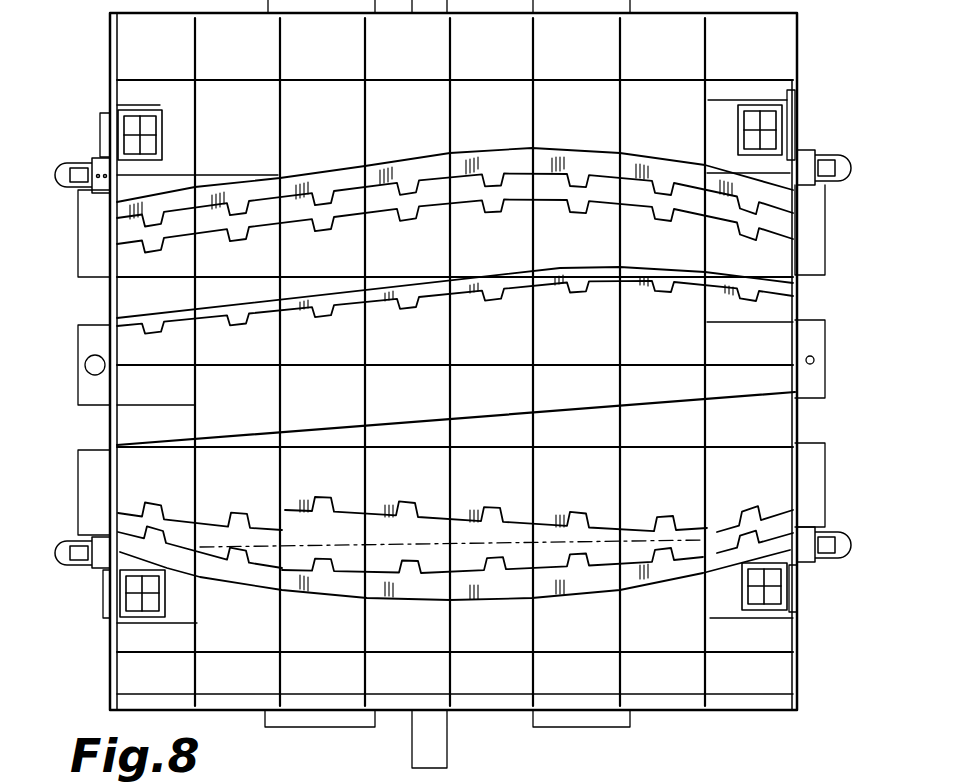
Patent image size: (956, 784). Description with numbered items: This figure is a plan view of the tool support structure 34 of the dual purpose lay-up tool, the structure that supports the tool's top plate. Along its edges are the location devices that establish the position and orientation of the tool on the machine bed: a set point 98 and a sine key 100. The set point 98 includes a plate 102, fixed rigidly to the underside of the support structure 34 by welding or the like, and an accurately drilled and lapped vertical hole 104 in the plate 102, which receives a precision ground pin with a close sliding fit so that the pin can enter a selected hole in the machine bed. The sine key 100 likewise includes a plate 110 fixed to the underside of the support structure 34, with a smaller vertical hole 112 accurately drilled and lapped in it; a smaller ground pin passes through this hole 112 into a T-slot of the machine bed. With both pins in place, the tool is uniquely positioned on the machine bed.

The support structure 34 is at (725, 783).
The set point 98 is at (77, 383).
The sine key 100 is at (830, 405).
The plate 102 is at (92, 338).
The vertical hole 104 is at (85, 367).
The plate 110 is at (817, 330).
The vertical hole 112 is at (814, 361).